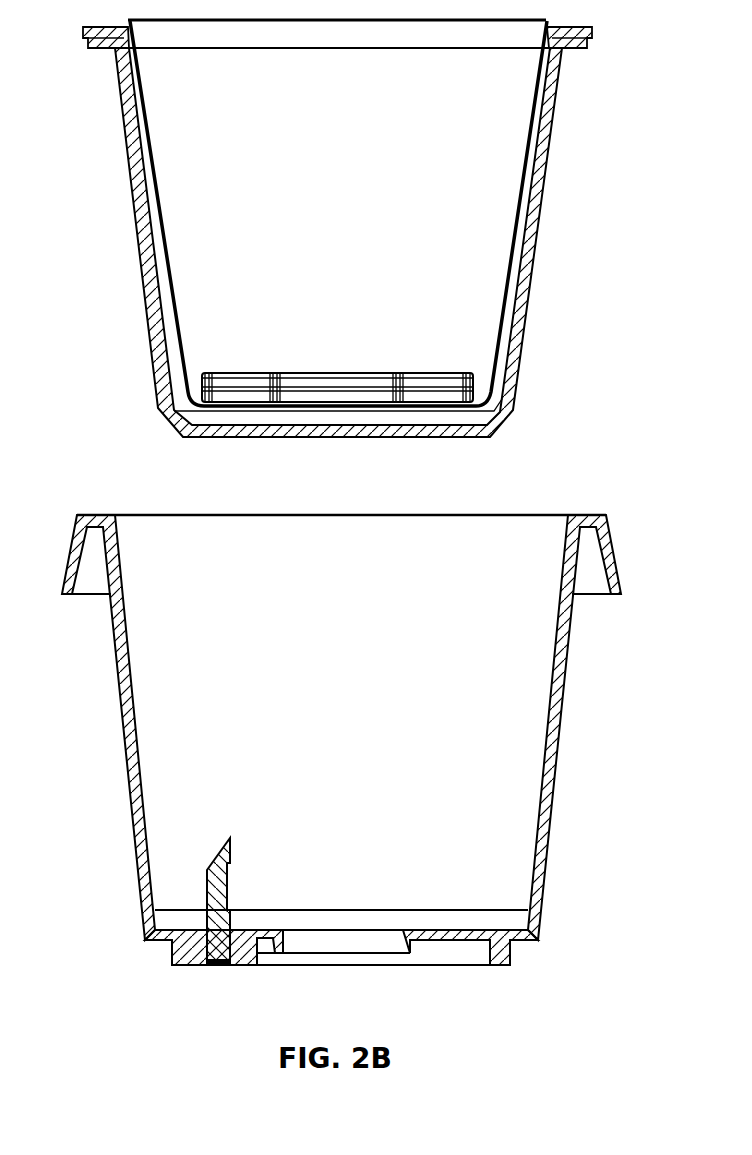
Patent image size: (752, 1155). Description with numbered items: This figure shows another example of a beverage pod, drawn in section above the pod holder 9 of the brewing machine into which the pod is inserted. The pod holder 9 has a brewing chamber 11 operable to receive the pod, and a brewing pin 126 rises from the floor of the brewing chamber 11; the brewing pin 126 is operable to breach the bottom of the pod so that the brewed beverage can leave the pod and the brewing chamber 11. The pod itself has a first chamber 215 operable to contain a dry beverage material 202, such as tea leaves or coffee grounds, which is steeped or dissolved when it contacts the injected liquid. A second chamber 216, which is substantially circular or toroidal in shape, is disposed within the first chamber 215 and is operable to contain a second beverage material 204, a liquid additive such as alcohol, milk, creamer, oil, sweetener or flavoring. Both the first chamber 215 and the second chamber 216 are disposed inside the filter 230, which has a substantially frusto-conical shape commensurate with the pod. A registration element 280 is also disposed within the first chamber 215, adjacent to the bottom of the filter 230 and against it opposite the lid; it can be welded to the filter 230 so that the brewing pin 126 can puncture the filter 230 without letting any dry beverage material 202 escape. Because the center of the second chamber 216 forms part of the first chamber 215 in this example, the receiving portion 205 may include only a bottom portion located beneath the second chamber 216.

The pod holder 9 is at (352, 740).
The brewing chamber 11 is at (474, 764).
The brewing pin 126 is at (212, 900).
The dry beverage material 202 is at (157, 122).
The second beverage material 204 is at (237, 395).
The receiving portion 205 is at (353, 417).
The first chamber 215 is at (351, 194).
The second chamber 216 is at (190, 398).
The filter 230 is at (158, 212).
The registration element 280 is at (433, 373).